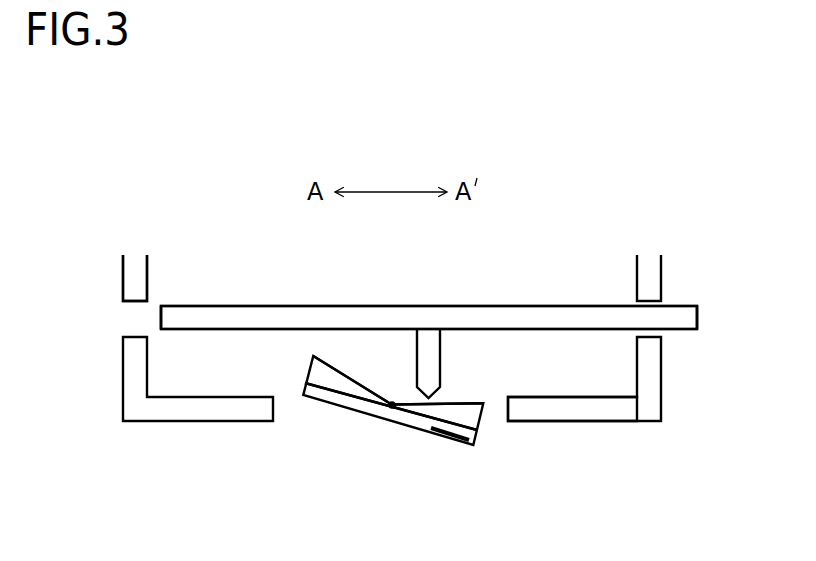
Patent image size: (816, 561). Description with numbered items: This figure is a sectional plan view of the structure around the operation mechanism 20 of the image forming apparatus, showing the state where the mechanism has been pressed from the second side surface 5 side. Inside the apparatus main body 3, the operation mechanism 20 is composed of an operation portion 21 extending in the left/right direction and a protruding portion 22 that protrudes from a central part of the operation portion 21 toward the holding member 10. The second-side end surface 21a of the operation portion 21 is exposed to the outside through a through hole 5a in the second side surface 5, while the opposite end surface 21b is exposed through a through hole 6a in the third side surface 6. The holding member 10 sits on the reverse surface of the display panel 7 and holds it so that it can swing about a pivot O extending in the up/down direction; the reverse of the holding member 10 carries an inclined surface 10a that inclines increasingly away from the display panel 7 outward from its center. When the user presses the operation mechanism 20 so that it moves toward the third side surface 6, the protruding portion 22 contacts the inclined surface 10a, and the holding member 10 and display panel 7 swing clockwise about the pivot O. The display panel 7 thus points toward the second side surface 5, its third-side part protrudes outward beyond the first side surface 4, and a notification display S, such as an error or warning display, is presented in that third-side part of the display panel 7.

The apparatus main body 3 is at (672, 242).
The first side surface 4 is at (580, 407).
The second side surface 5 is at (133, 377).
The through hole 5a is at (132, 313).
The third side surface 6 is at (648, 375).
The through hole 6a is at (647, 302).
The display panel 7 is at (323, 397).
The holding member 10 is at (468, 413).
The inclined surface 10a is at (340, 367).
The operation mechanism 20 is at (345, 300).
The operation portion 21 is at (486, 318).
The end surface 21a is at (161, 320).
The end surface 21b is at (698, 318).
The protruding portion 22 is at (428, 357).
The pivot O is at (393, 408).
The notification display S is at (447, 443).